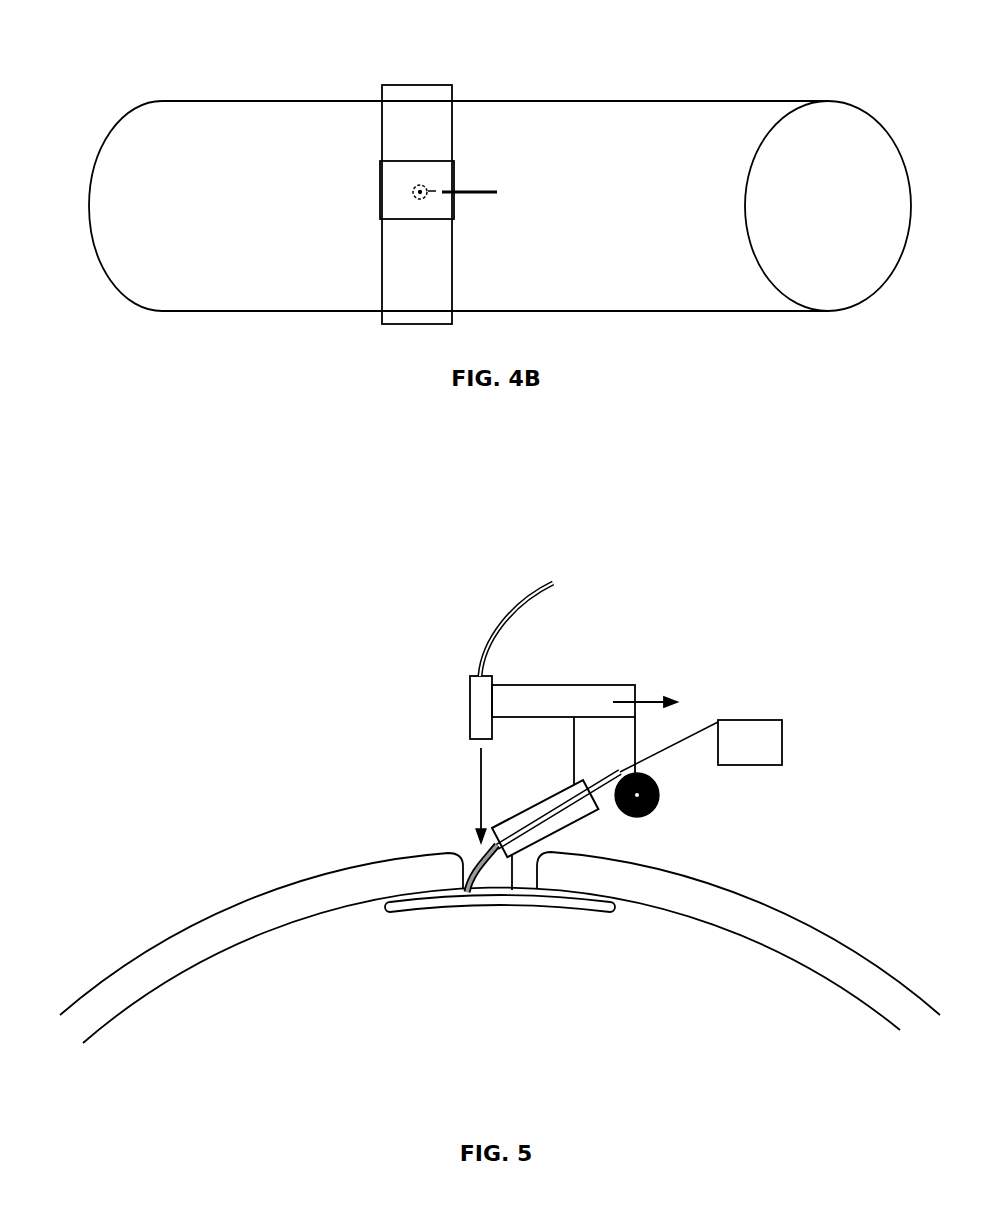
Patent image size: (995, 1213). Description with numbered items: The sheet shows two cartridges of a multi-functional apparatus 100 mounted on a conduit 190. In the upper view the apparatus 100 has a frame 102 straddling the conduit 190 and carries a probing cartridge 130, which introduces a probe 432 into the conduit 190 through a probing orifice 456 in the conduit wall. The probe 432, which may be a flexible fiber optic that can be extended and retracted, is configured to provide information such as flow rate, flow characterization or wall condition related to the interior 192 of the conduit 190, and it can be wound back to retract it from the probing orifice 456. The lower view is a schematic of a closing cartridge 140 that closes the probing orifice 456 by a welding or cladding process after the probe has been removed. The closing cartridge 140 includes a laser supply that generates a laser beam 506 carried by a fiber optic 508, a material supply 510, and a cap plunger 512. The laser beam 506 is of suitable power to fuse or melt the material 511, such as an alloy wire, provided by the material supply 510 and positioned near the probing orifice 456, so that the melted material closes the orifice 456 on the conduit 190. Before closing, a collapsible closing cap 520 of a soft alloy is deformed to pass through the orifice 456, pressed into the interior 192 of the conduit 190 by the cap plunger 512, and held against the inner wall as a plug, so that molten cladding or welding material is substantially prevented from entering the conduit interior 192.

In FIG. 4B, the multi-functional apparatus 100 is at (423, 172).
In FIG. 4B, the frame 102 is at (432, 100).
In FIG. 4B, the probing cartridge 130 is at (428, 220).
In FIG. 4B, the conduit 190 is at (302, 101).
In FIG. 5, the conduit 190 is at (220, 927).
In FIG. 5, the interior of the conduit 192 is at (245, 980).
In FIG. 4B, the probe 432 is at (478, 193).
In FIG. 4B, the probing orifice 456 is at (408, 192).
In FIG. 5, the probing orifice 456 is at (462, 850).
In FIG. 5, the closing cartridge 140 is at (513, 737).
In FIG. 5, the laser beam 506 is at (480, 767).
In FIG. 5, the fiber optic 508 is at (493, 622).
In FIG. 5, the material supply 510 is at (656, 804).
In FIG. 5, the material 511 is at (620, 773).
In FIG. 5, the cap plunger 512 is at (477, 703).
In FIG. 5, the collapsible closing cap 520 is at (427, 903).